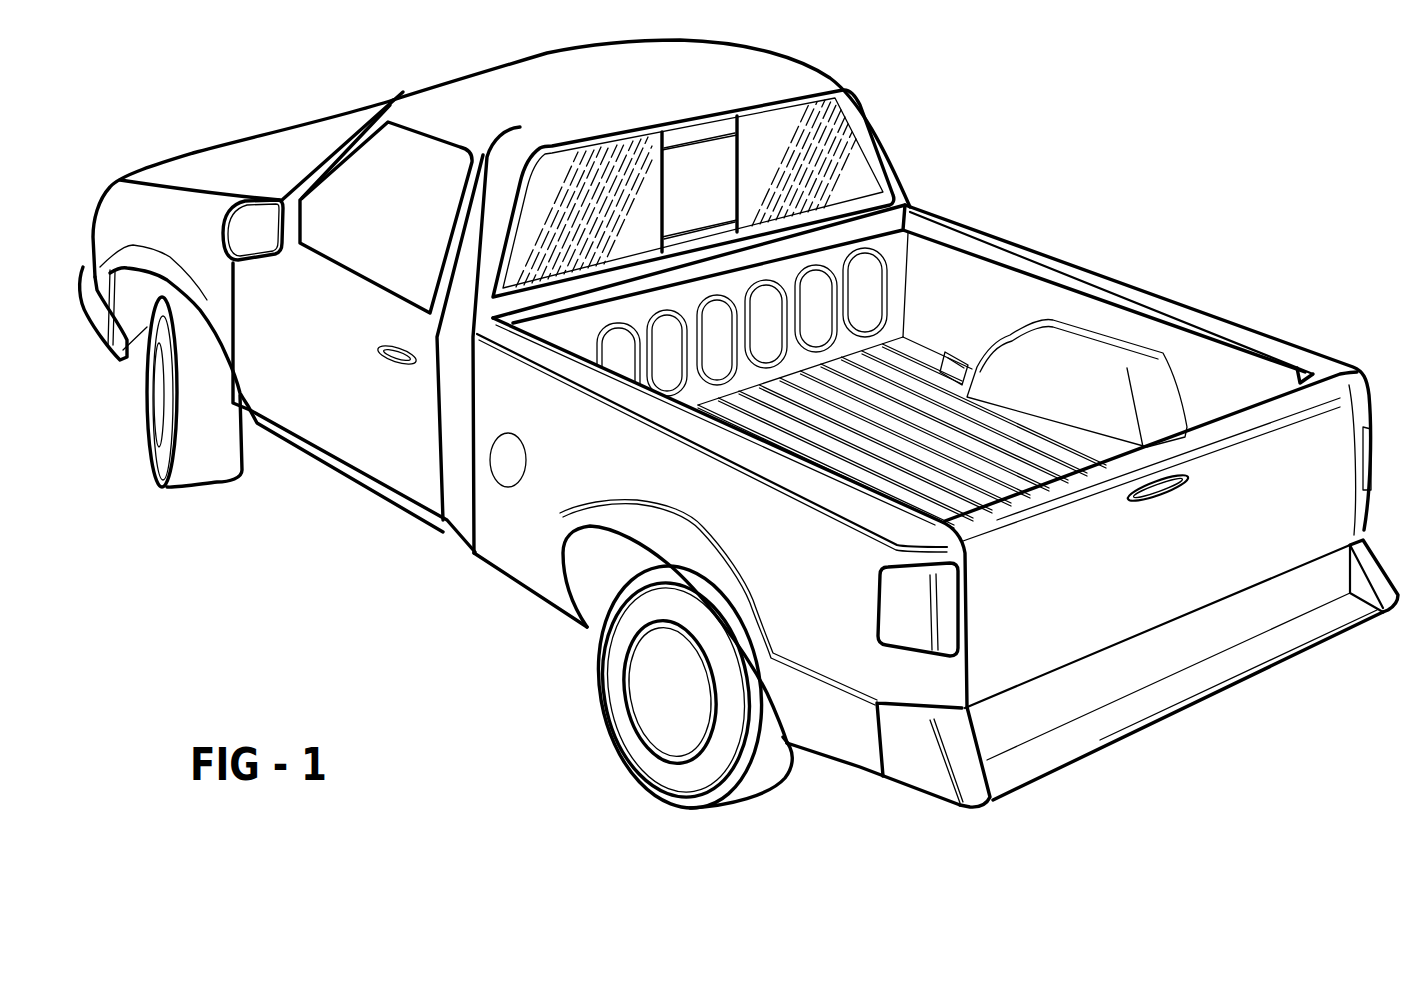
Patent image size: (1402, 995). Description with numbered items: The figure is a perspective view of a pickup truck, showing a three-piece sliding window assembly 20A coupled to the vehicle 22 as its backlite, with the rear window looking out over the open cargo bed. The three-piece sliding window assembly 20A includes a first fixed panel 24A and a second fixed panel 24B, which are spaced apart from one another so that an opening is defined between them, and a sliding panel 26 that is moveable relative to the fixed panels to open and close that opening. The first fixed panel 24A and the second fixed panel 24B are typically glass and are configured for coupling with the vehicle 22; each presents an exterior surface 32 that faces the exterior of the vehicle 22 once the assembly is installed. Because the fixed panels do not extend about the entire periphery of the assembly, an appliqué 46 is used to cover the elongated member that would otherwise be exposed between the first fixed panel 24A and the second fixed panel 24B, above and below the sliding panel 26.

The three-piece sliding window assembly 20A is at (892, 124).
The vehicle 22 is at (1253, 304).
The first fixed panel 24A is at (520, 238).
The second fixed panel 24B is at (860, 147).
The sliding panel 26 is at (707, 162).
The exterior surface 32 is at (644, 244).
The appliqué 46 is at (680, 134).